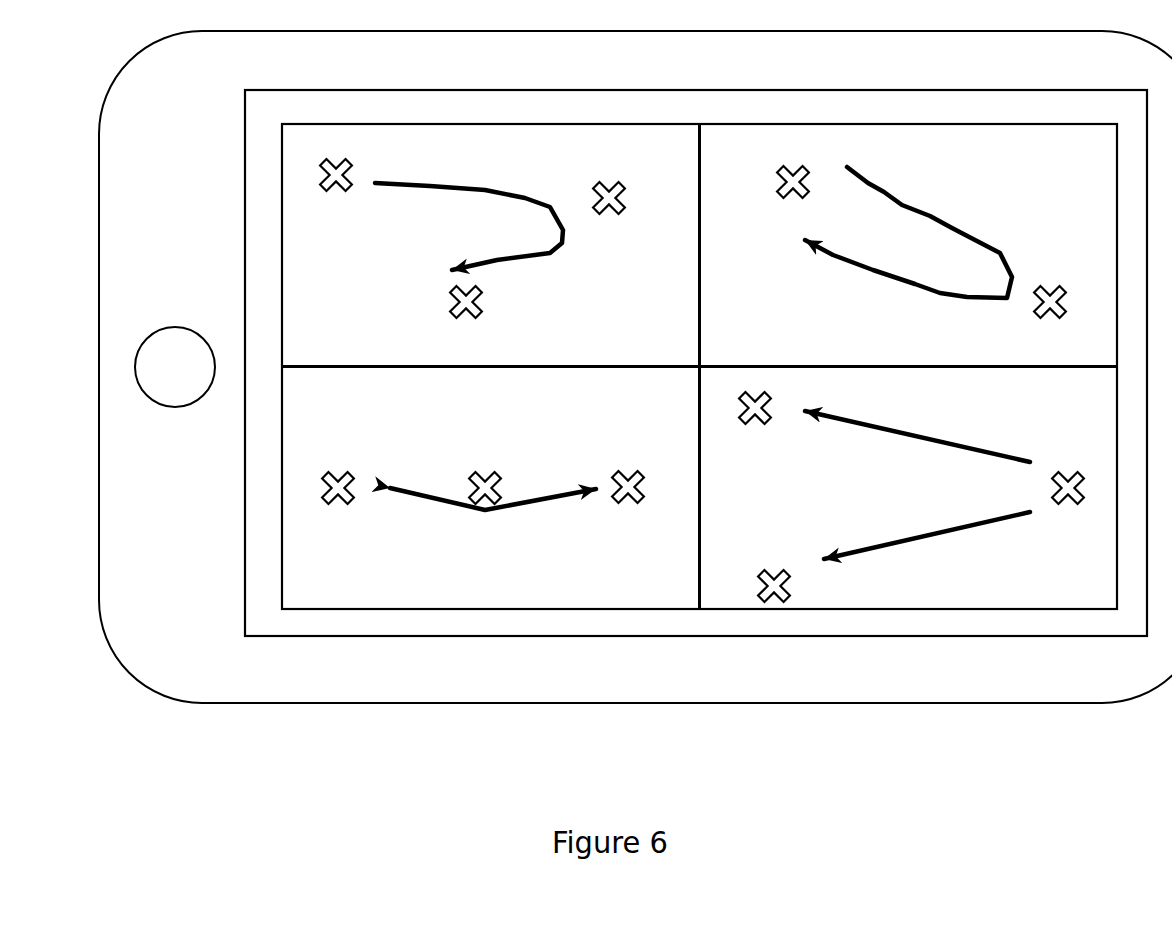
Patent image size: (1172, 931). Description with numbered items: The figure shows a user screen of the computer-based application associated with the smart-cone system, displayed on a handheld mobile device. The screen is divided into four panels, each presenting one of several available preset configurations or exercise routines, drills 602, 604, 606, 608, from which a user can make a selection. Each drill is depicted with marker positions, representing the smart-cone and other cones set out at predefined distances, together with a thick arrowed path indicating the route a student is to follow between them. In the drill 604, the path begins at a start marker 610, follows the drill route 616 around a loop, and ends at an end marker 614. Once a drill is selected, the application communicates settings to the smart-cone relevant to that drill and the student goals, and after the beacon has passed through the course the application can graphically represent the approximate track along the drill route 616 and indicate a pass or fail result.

The drill 602 is at (450, 116).
The drill 604 is at (922, 196).
The drill 606 is at (290, 526).
The drill 608 is at (946, 619).
The gesture start marker 610 is at (820, 180).
The gesture end marker 614 is at (1018, 313).
The drill route 616 is at (937, 195).